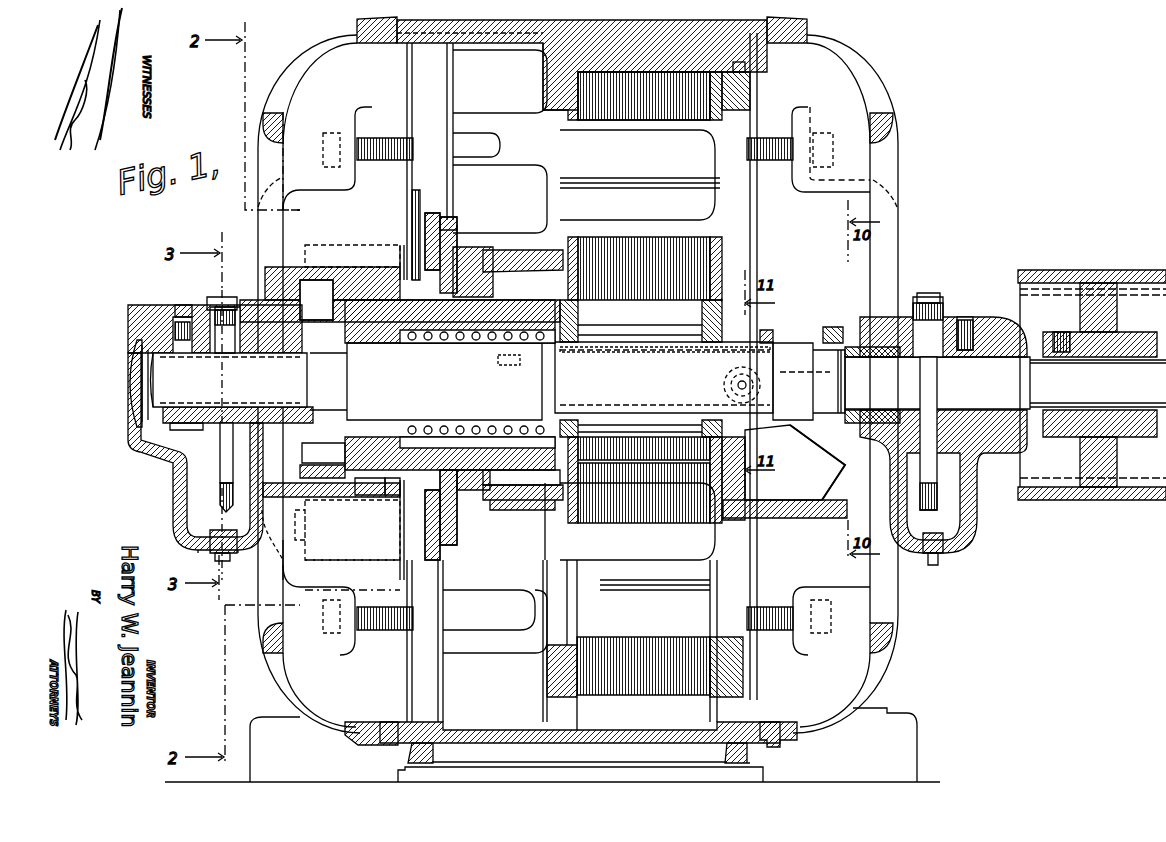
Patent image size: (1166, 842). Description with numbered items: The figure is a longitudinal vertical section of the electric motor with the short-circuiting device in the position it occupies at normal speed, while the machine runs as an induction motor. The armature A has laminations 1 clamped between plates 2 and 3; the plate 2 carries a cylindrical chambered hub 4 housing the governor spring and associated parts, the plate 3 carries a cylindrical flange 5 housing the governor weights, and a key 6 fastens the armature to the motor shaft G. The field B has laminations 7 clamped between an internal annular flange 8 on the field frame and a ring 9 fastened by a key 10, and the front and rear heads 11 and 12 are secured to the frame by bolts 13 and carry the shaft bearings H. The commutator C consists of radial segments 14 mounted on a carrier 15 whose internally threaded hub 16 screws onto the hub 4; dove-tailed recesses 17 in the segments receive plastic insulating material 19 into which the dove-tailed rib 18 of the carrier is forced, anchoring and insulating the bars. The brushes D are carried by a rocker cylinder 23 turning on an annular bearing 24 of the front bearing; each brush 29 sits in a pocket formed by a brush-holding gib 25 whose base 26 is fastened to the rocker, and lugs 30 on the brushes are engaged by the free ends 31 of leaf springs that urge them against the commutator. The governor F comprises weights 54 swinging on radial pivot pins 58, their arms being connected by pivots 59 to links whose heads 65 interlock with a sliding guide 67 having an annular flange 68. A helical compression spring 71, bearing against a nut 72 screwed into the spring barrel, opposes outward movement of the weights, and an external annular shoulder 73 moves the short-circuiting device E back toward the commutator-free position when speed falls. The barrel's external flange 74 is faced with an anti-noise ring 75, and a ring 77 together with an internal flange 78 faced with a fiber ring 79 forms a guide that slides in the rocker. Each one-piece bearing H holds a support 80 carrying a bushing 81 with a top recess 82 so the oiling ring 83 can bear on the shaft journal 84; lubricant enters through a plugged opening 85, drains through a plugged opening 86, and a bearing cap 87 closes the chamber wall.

The armature laminations 1 is at (655, 505).
The armature plate 2 is at (546, 525).
The armature plate 3 is at (712, 525).
The chambered hub 4 is at (511, 505).
The cylindrical flange 5 is at (795, 518).
The key 6 is at (625, 348).
The field laminations 7 is at (643, 112).
The internal annular flange 8 is at (548, 112).
The ring 9 is at (748, 88).
The key 10 is at (745, 64).
The front head 11 is at (283, 685).
The rear head 12 is at (877, 675).
The bolts 13 is at (386, 632).
The commutator segments 14 is at (415, 197).
The carrier 15 is at (459, 233).
The internally threaded hub 16 is at (473, 271).
The dove-tailed recesses 17 is at (432, 233).
The dove-tailed rib 18 is at (452, 530).
The insulating material 19 is at (447, 218).
The rocker 23 is at (272, 535).
The annular bearing 24 is at (268, 292).
The brush-holding gib 25 is at (328, 245).
The gib base 26 is at (368, 497).
The brush 29 is at (402, 258).
The lugs 30 is at (300, 588).
The spring free ends 31 is at (270, 560).
The governor weights 54 is at (830, 478).
The pivot pins 58 is at (775, 372).
The pivots 59 is at (760, 380).
The link heads 65 is at (515, 366).
The guide sleeve 67 is at (523, 263).
The annular flange 68 is at (523, 497).
The governor spring 71 is at (462, 346).
The nut 72 is at (377, 346).
The annular shoulder 73 is at (422, 345).
The external flange 74 is at (340, 300).
The anti-noise ring 75 is at (354, 278).
The ring 77 is at (395, 497).
The internal flange 78 is at (342, 470).
The fiber ring 79 is at (342, 452).
The support 80 is at (197, 431).
The bearing bushing 81 is at (148, 410).
The recess 82 is at (240, 352).
The oiling ring 83 is at (233, 442).
The shaft journals 84 is at (229, 380).
The plugged opening 85 is at (205, 306).
The plugged drain opening 86 is at (345, 498).
The bearing cap 87 is at (128, 378).
The armature A is at (600, 260).
The field B is at (545, 80).
The commutator C is at (455, 220).
The brushes D is at (352, 577).
The short-circuiting device E is at (457, 515).
The governor F is at (795, 462).
The motor shaft G is at (664, 377).
The shaft bearings H is at (220, 427).